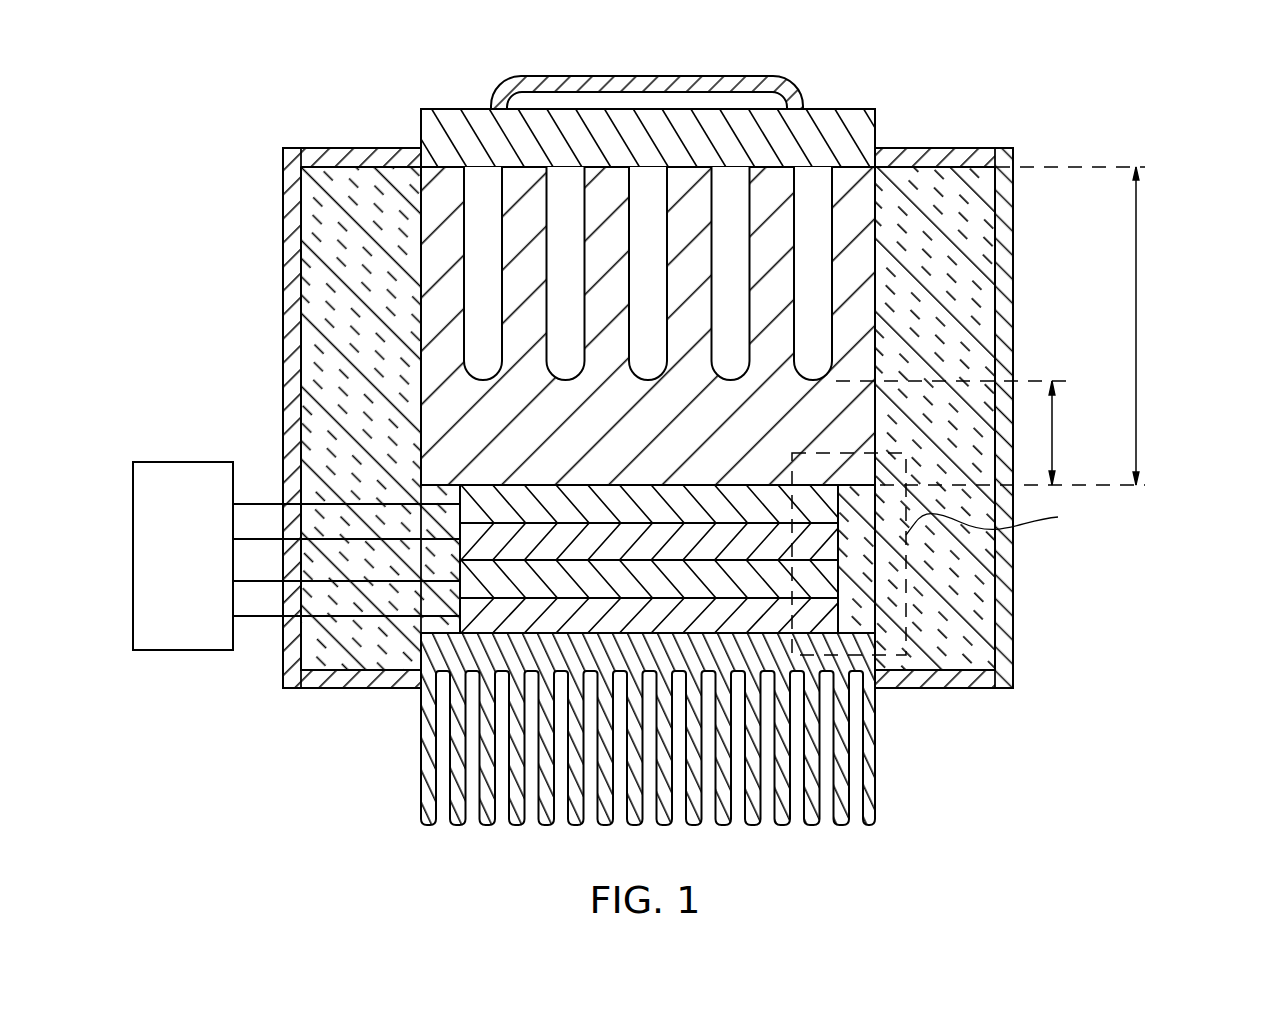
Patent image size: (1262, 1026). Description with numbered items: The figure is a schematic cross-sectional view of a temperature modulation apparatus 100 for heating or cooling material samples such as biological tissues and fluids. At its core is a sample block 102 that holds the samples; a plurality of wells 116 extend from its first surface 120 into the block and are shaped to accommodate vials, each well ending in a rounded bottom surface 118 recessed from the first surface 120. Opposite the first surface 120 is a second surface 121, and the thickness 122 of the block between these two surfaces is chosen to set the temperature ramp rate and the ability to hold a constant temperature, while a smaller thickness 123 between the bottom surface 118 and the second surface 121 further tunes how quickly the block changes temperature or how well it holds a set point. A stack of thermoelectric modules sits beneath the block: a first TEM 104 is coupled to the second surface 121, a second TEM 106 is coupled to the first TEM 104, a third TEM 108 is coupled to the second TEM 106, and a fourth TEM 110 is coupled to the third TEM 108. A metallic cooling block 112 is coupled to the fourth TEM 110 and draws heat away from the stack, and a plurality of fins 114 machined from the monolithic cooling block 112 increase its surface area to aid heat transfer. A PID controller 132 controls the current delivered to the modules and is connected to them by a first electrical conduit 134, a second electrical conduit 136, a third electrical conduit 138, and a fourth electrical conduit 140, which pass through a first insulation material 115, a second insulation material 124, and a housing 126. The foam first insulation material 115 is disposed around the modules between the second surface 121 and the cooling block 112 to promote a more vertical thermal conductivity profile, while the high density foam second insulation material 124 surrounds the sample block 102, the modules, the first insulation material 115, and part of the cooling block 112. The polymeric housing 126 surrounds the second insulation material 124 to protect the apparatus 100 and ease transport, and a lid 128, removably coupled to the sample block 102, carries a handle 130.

The temperature modulation apparatus 100 is at (188, 89).
The sample block 102 is at (866, 300).
The first TEM 104 is at (713, 505).
The second TEM 106 is at (618, 535).
The third TEM 108 is at (565, 582).
The fourth TEM 110 is at (502, 612).
The cooling block 112 is at (432, 646).
The fins 114 is at (877, 801).
The first insulation material 115 is at (862, 592).
The wells 116 is at (467, 279).
The bottom surface 118 is at (733, 375).
The first surface 120 is at (780, 171).
The second surface 121 is at (760, 481).
The thickness 122 is at (1136, 333).
The thickness 123 is at (1052, 425).
The second insulation material 124 is at (320, 265).
The housing 126 is at (292, 353).
The lid 128 is at (855, 128).
The handle 130 is at (722, 75).
The PID controller 132 is at (166, 558).
The first electrical conduit 134 is at (272, 503).
The second electrical conduit 136 is at (250, 539).
The third electrical conduit 138 is at (250, 581).
The fourth electrical conduit 140 is at (272, 616).